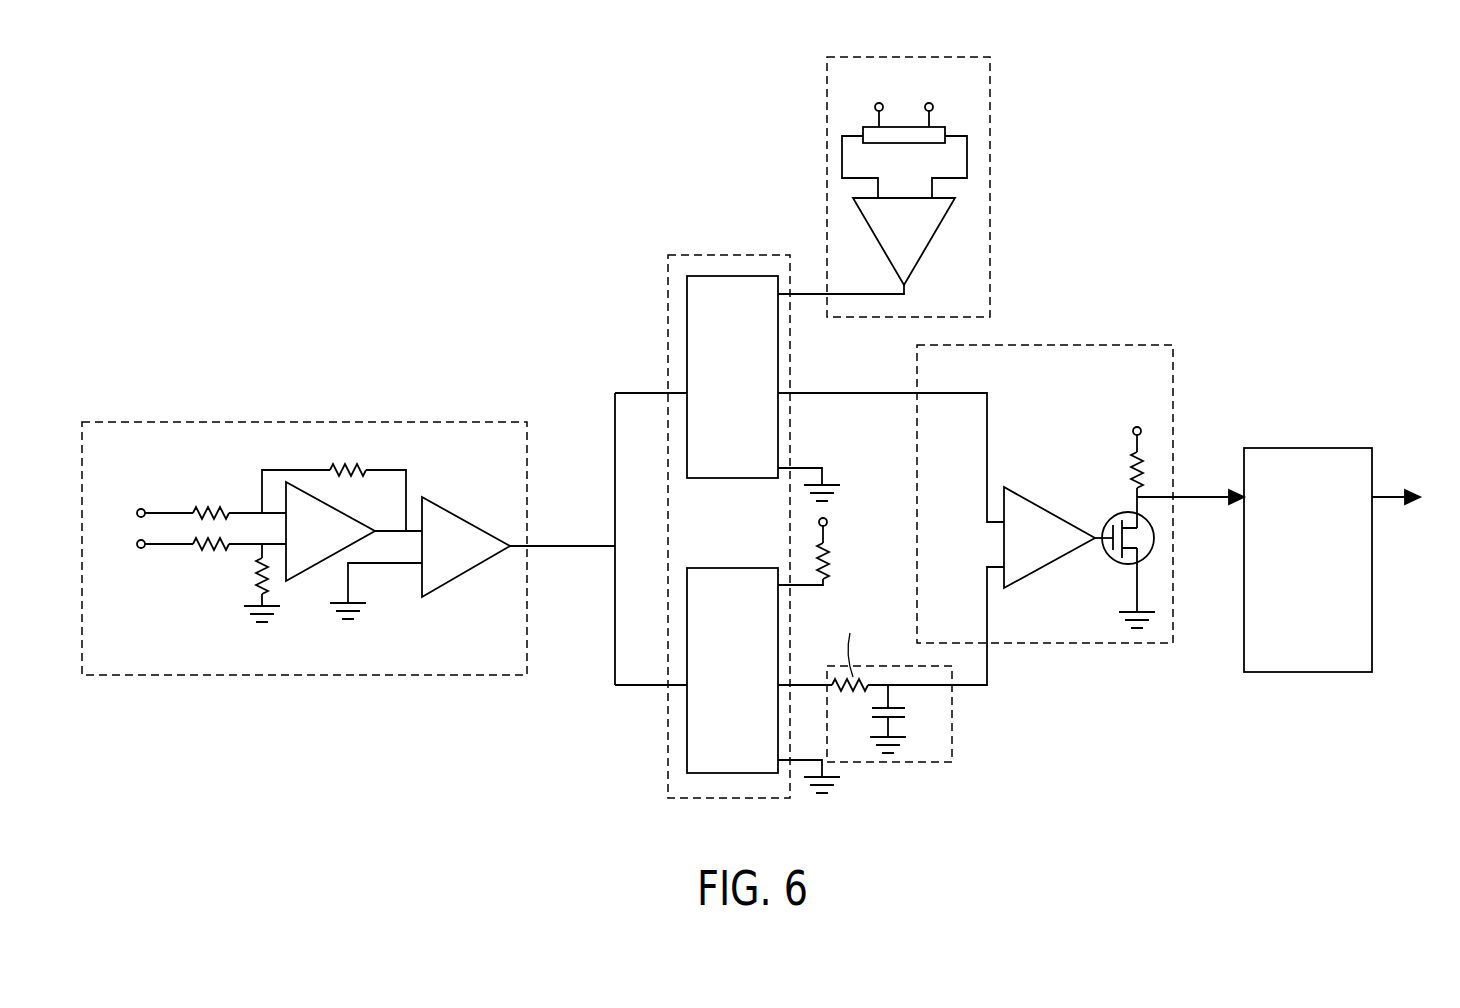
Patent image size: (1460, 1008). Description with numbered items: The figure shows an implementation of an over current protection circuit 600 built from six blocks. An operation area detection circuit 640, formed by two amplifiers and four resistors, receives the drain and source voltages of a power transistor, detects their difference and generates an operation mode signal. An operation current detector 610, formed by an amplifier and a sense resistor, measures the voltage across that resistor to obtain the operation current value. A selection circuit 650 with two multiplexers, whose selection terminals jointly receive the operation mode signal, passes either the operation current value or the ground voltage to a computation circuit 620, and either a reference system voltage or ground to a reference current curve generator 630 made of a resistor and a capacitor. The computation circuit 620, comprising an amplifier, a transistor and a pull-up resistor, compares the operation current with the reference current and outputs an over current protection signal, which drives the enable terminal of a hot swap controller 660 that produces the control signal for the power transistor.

The over current protection circuit 600 is at (768, 427).
The operation current detector 610 is at (968, 57).
The computation circuit 620 is at (1107, 345).
The reference current curve generator 630 is at (915, 762).
The operation area detection circuit 640 is at (477, 422).
The selection circuit 650 is at (720, 255).
The hot swap controller 660 is at (1308, 448).